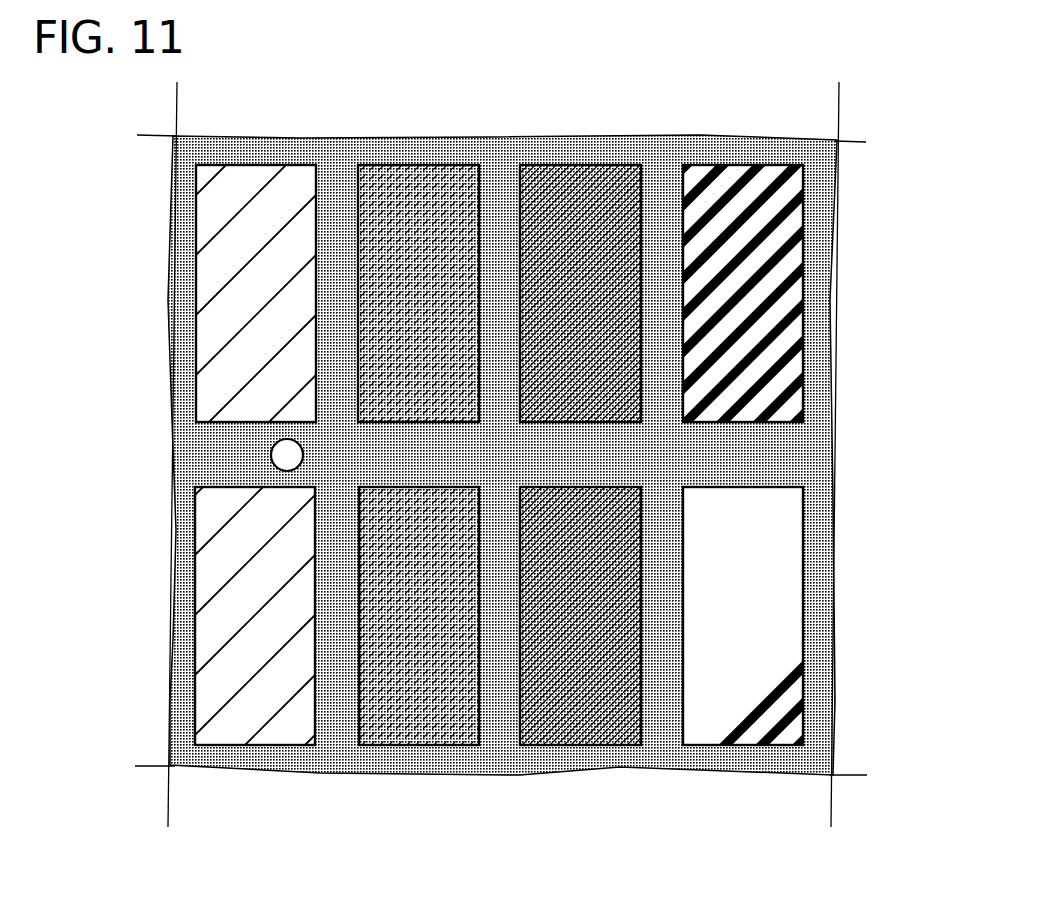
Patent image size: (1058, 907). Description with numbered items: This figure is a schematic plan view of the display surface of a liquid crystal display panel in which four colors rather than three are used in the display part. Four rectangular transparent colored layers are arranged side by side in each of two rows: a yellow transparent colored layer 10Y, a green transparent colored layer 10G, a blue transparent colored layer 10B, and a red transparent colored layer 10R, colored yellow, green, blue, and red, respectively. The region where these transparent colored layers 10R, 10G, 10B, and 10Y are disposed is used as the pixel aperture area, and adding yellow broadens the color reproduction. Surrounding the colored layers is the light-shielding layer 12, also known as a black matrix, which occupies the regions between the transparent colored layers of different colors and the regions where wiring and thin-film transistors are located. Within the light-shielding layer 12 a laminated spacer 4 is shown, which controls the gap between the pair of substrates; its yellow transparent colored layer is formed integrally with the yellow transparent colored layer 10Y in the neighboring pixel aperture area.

The yellow transparent colored layer 10Y is at (227, 175).
The green transparent colored layer 10G is at (381, 175).
The blue transparent colored layer 10B is at (550, 175).
The red transparent colored layer 10R is at (712, 175).
The light-shielding layer 12 is at (822, 280).
The laminated spacer 4 is at (280, 453).